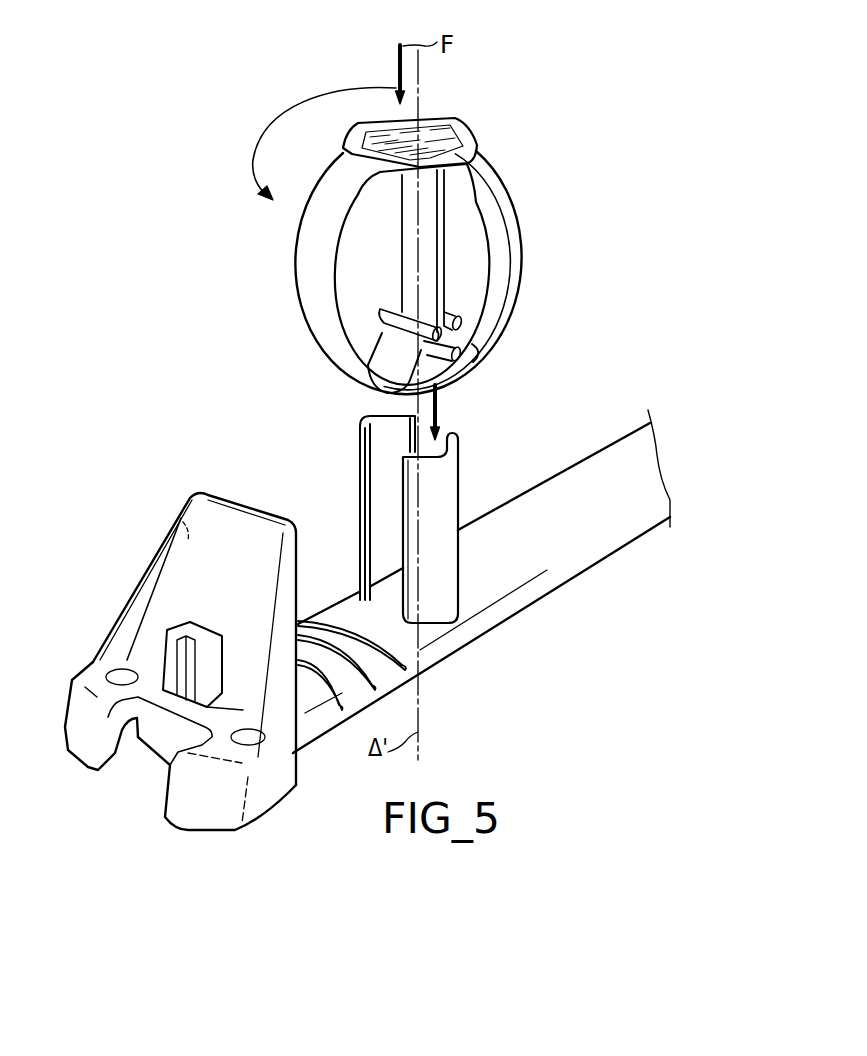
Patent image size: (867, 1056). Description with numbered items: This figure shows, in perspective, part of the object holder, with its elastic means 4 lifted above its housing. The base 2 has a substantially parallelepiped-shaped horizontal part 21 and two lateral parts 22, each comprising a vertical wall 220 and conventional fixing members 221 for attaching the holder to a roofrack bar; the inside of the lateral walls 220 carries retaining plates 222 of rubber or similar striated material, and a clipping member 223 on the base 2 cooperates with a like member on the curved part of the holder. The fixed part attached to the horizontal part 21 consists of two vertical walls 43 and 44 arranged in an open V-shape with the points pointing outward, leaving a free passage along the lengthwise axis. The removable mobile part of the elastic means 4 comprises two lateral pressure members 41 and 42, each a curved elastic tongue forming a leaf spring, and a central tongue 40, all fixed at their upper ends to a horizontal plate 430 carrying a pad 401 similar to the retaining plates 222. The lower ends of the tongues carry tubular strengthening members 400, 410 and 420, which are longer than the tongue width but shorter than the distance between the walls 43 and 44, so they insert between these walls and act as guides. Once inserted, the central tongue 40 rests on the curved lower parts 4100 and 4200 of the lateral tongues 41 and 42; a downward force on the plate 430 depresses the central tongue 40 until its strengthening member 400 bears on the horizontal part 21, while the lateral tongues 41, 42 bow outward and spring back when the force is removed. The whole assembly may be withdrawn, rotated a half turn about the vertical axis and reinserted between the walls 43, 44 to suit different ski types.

The base 2 is at (458, 682).
The horizontal part 21 is at (497, 608).
The clamp 22 is at (108, 543).
The vertical walls 220 is at (233, 523).
The fixing members 221 is at (200, 813).
The retaining plates 222 is at (178, 518).
The clipping member 223 is at (188, 623).
The elastic means 4 is at (248, 290).
The central tongue 40 is at (440, 212).
The lateral pressure member 41 is at (310, 316).
The lateral pressure member 42 is at (523, 238).
The vertical wall 43 is at (447, 487).
The vertical wall 44 is at (360, 457).
The tubular member 400 is at (460, 367).
The pad 401 is at (430, 130).
The tubular member 410 is at (380, 310).
The tubular member 420 is at (467, 318).
The horizontal plate 430 is at (493, 158).
The curved lower part 4100 is at (392, 392).
The curved lower part 4200 is at (473, 360).